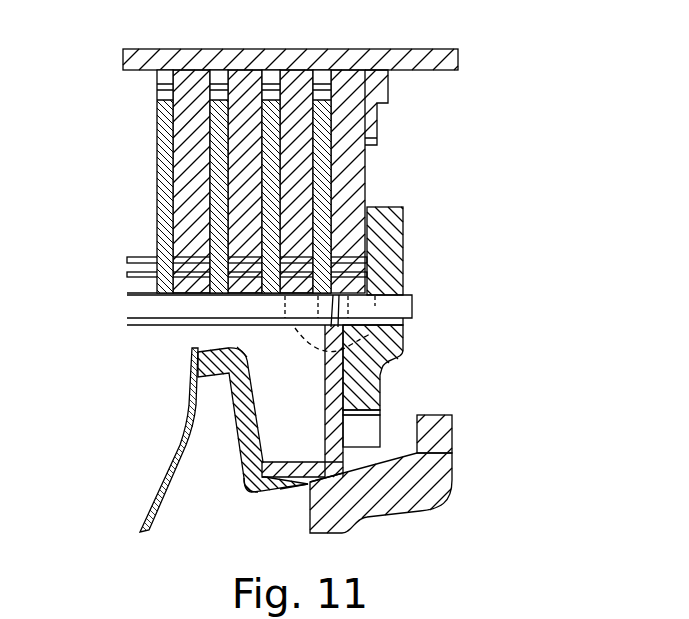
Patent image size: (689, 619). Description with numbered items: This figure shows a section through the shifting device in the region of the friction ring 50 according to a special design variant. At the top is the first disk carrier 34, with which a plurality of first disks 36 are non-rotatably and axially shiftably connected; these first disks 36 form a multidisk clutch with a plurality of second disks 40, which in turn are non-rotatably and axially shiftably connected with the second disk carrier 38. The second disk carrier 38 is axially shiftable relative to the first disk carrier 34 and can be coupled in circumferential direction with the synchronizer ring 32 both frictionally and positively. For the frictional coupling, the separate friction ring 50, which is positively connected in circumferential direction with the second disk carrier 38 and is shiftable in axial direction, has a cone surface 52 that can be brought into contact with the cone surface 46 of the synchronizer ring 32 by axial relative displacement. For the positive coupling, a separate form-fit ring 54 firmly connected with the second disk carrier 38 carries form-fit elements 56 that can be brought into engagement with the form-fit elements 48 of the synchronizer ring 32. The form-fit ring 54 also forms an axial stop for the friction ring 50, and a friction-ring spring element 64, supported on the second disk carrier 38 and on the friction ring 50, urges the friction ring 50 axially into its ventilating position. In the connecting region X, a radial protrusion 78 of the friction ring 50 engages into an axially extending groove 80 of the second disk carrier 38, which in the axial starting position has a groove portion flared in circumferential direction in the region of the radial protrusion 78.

The first disk carrier 34 is at (218, 62).
The first disks 36 is at (308, 78).
The second disks 40 is at (220, 188).
The form-fit ring 54 is at (387, 225).
The radial protrusion 78 is at (342, 300).
The connecting region X is at (367, 338).
The second disk carrier 38 is at (160, 313).
The friction-ring spring element 64 is at (172, 468).
The groove 80 is at (298, 336).
The friction ring 50 is at (247, 489).
The cone surface 52 is at (301, 489).
The form-fit elements 48 is at (440, 428).
The synchronizer ring 32 is at (440, 478).
The form-fit elements 56 is at (370, 430).
The cone surface 46 is at (361, 483).